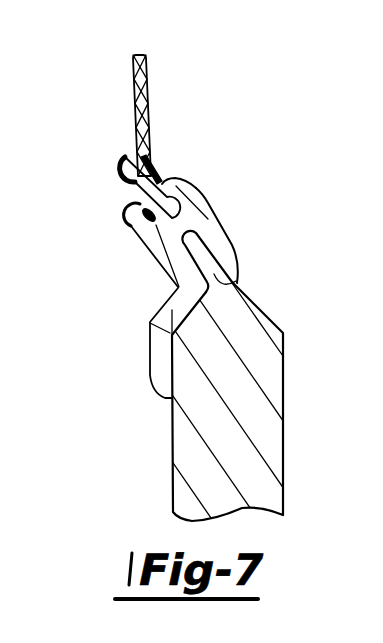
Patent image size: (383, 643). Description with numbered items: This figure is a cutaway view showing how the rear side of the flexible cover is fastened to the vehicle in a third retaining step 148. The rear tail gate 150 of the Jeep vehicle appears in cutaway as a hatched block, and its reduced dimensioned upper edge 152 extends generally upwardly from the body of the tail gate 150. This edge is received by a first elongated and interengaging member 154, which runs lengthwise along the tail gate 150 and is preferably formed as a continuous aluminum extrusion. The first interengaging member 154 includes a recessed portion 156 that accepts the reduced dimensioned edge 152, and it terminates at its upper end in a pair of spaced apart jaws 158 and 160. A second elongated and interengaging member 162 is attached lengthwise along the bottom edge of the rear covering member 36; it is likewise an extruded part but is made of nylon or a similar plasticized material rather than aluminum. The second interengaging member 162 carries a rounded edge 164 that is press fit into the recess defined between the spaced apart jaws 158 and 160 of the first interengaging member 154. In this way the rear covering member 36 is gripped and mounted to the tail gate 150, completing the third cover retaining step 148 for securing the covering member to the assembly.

The rear covering member 36 is at (132, 72).
The third retaining step 148 is at (229, 129).
The rear tail gate 150 is at (285, 397).
The reduced dimensioned upper edge 152 is at (240, 273).
The first elongated and interengaging member 154 is at (178, 287).
The recessed portion 156 is at (208, 219).
The jaw 158 is at (125, 200).
The jaw 160 is at (170, 181).
The second elongated and interengaging member 162 is at (122, 158).
The rounded edge 164 is at (150, 226).